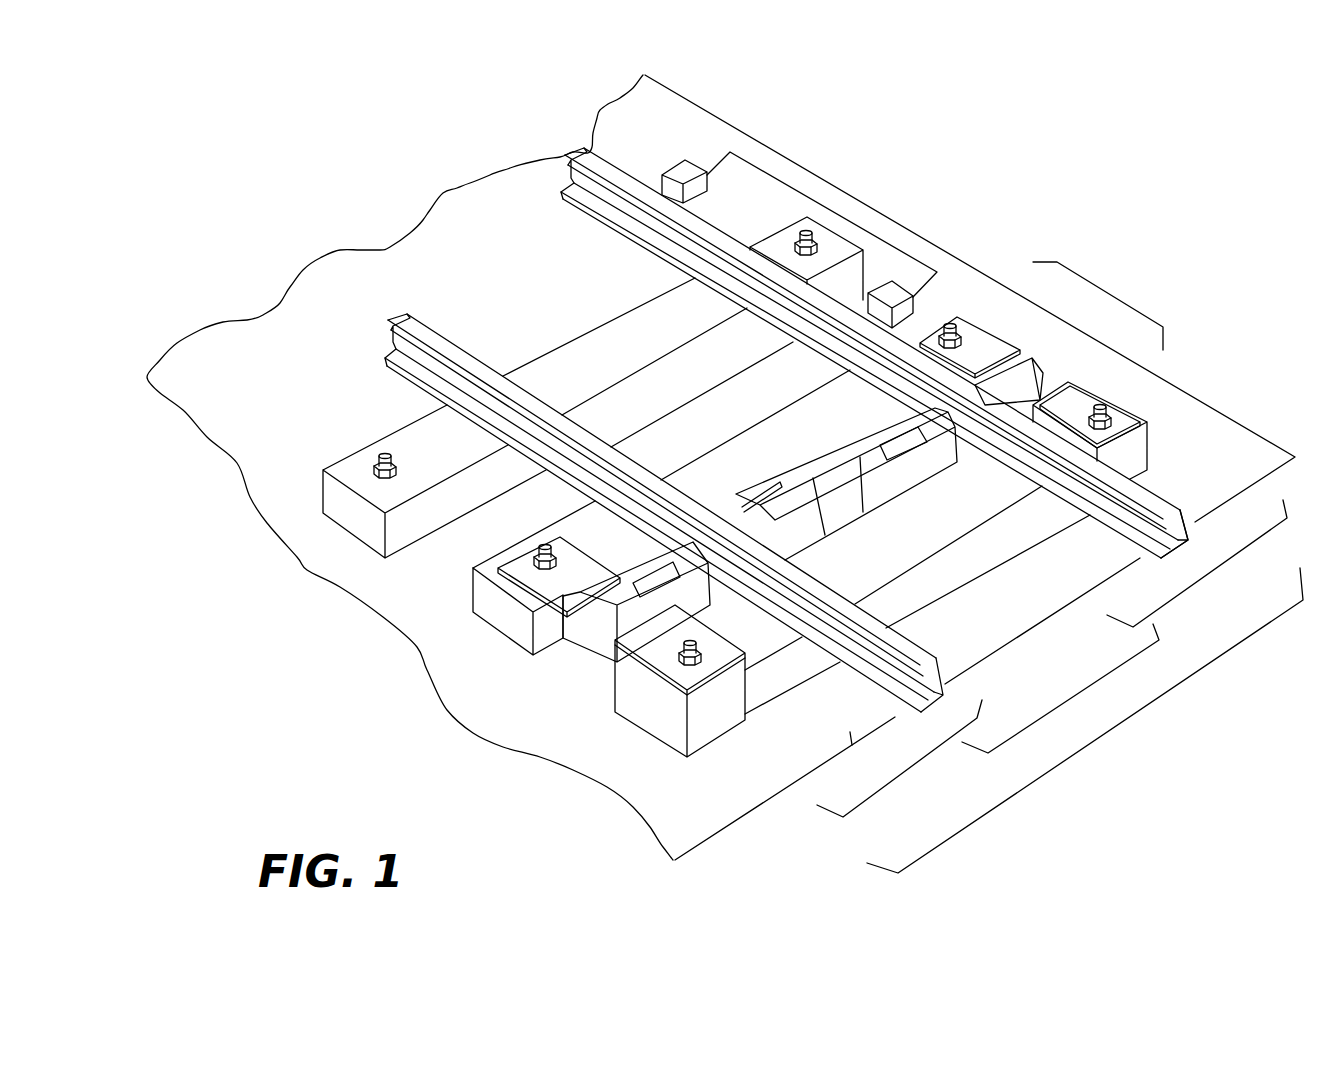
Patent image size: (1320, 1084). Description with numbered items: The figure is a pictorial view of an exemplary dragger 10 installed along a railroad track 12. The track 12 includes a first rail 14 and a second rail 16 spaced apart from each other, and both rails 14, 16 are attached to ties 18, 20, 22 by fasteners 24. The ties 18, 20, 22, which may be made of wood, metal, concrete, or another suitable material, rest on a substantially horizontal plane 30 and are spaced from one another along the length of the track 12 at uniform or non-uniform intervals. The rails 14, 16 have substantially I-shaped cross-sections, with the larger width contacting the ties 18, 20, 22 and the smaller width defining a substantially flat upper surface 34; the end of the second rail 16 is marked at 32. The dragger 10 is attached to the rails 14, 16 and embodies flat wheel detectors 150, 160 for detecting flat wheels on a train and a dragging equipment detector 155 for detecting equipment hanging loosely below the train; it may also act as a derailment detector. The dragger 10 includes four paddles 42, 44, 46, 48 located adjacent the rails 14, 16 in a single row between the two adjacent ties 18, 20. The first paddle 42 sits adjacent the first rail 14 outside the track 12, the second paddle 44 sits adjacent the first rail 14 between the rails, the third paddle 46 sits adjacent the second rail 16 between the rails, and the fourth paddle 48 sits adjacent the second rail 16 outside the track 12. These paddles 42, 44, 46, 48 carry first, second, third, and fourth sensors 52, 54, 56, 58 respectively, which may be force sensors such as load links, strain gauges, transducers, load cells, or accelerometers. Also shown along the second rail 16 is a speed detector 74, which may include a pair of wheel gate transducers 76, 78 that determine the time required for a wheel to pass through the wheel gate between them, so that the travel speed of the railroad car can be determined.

The dragger 10 is at (1105, 288).
The railroad track 12 is at (1120, 723).
The first rail 14 is at (423, 326).
The second rail 16 is at (592, 157).
The tie 18 is at (667, 733).
The tie 20 is at (490, 612).
The tie 22 is at (345, 520).
The fastener 24 is at (705, 676).
The horizontal plane 30 is at (852, 745).
The rail end 32 is at (1190, 520).
The upper surface 34 is at (1155, 496).
The first paddle 42 is at (621, 616).
The second paddle 44 is at (828, 483).
The third paddle 46 is at (860, 455).
The fourth paddle 48 is at (1035, 369).
The first sensor 52 is at (633, 568).
The second sensor 54 is at (753, 493).
The third sensor 56 is at (893, 448).
The fourth sensor 58 is at (1010, 352).
The speed detector 74 is at (803, 191).
The wheel gate transducer 76 is at (920, 307).
The wheel gate transducer 78 is at (681, 168).
The flat wheel detector 150 is at (893, 783).
The dragging equipment detector 155 is at (1040, 718).
The flat wheel detector 160 is at (1182, 598).